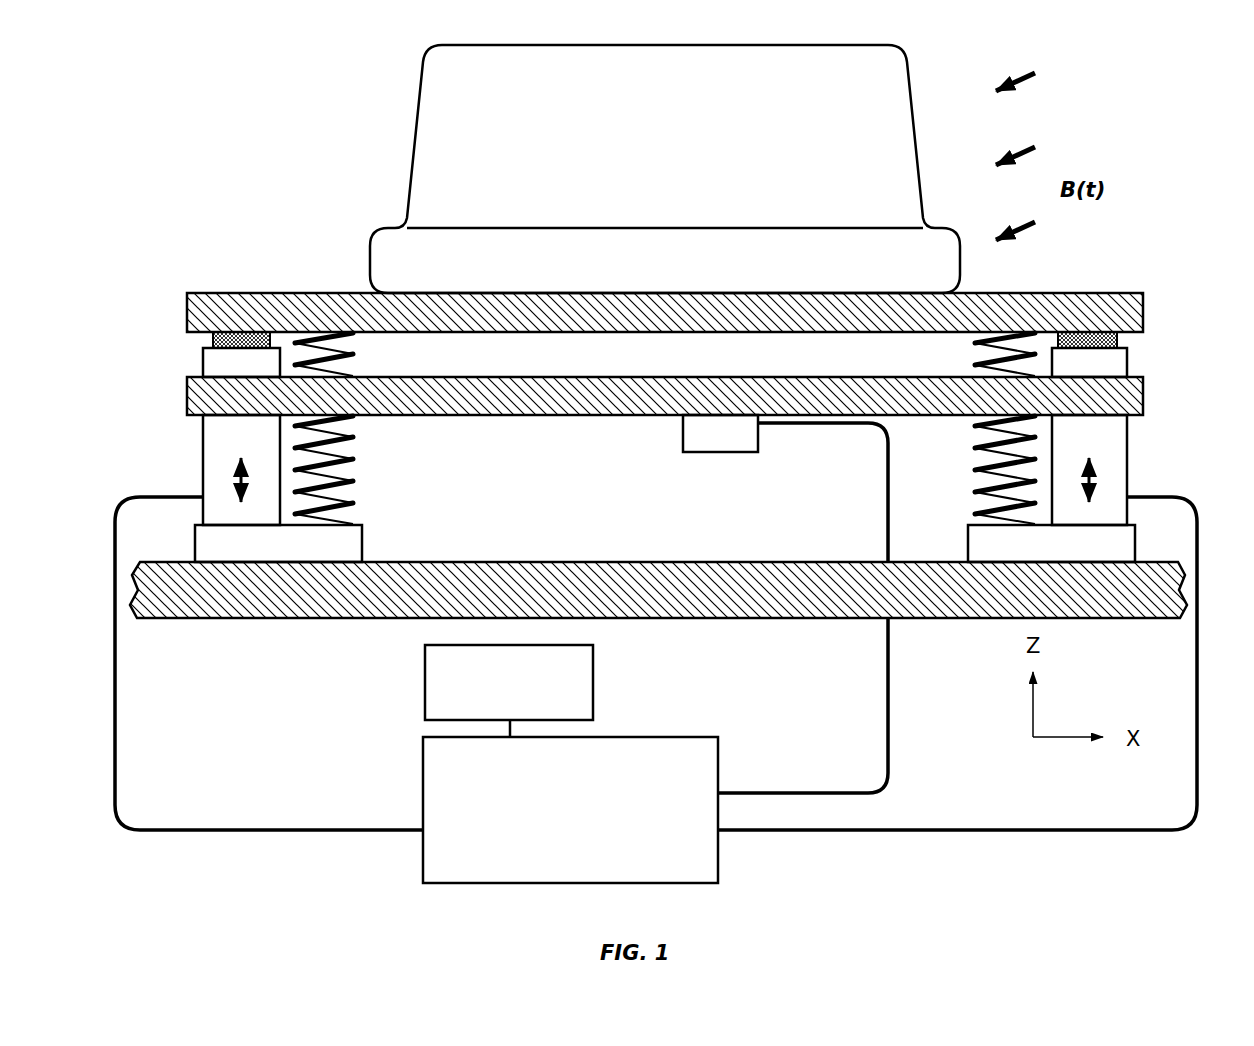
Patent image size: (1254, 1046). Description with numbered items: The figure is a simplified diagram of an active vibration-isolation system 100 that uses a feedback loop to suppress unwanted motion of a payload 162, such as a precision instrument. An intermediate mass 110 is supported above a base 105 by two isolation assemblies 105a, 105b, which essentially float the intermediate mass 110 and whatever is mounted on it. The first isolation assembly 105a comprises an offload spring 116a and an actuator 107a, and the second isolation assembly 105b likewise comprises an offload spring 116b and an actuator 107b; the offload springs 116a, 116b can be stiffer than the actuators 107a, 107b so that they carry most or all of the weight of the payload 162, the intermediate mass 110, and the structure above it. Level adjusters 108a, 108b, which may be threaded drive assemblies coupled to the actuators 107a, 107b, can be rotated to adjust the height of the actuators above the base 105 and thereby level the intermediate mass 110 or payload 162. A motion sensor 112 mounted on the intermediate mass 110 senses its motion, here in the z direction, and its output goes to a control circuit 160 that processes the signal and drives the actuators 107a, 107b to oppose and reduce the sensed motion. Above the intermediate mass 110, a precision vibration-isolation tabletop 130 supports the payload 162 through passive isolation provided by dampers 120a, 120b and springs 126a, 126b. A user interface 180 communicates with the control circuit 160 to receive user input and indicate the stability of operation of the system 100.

The vibration-isolation system 100 is at (1162, 130).
The payload 162 is at (686, 282).
The precision vibration-isolation tabletop 130 is at (225, 292).
The intermediate mass 110 is at (592, 377).
The base 105 is at (643, 561).
The damper 120a is at (203, 350).
The damper 120b is at (1127, 363).
The spring 126a is at (355, 363).
The spring 126b is at (975, 363).
The first isolation assembly 105a is at (400, 493).
The isolation assembly 105b is at (1160, 462).
The actuator 107a is at (268, 449).
The actuator 107b is at (1116, 449).
The offload spring 116a is at (355, 488).
The offload spring 116b is at (975, 488).
The level adjuster 108a is at (305, 555).
The level adjuster 108b is at (1078, 555).
The motion sensor 112 is at (740, 445).
The user interface 180 is at (529, 694).
The control circuit 160 is at (589, 822).